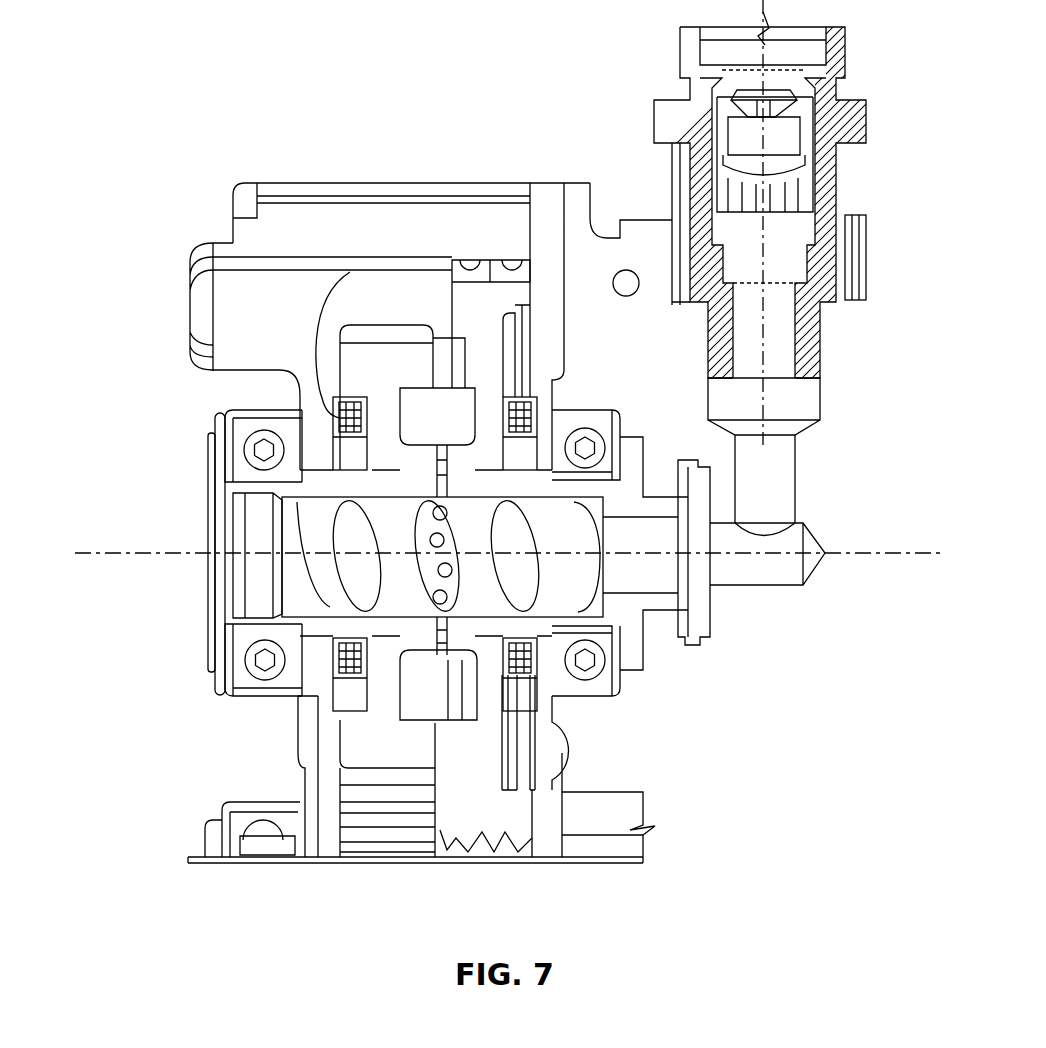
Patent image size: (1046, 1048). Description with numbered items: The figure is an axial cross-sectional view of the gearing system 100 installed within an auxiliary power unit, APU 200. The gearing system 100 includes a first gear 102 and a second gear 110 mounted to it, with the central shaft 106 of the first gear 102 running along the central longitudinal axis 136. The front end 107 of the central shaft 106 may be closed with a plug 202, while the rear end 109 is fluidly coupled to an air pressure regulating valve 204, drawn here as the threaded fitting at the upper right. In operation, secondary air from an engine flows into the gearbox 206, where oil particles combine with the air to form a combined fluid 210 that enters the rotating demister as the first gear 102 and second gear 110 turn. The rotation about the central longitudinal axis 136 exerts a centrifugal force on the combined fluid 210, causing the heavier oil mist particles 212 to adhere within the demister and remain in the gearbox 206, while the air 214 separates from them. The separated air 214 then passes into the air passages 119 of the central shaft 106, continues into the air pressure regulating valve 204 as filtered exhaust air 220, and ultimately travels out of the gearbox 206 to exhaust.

The auxiliary power unit 200 is at (152, 135).
The second gear 110 is at (358, 335).
The combined fluid 210 is at (436, 362).
The first gear 102 is at (510, 280).
The gearbox 206 is at (320, 345).
The front end 107 is at (233, 502).
The plug 202 is at (255, 563).
The air 214 is at (310, 576).
The gearing system 100 is at (236, 596).
The central shaft 106 is at (315, 630).
The oil mist particles 212 is at (437, 692).
The air pressure regulating valve 204 is at (793, 270).
The filtered exhaust air 220 is at (763, 380).
The central longitudinal axis 136 is at (844, 553).
The air passages 119 is at (310, 576).
The rear end 109 is at (693, 640).